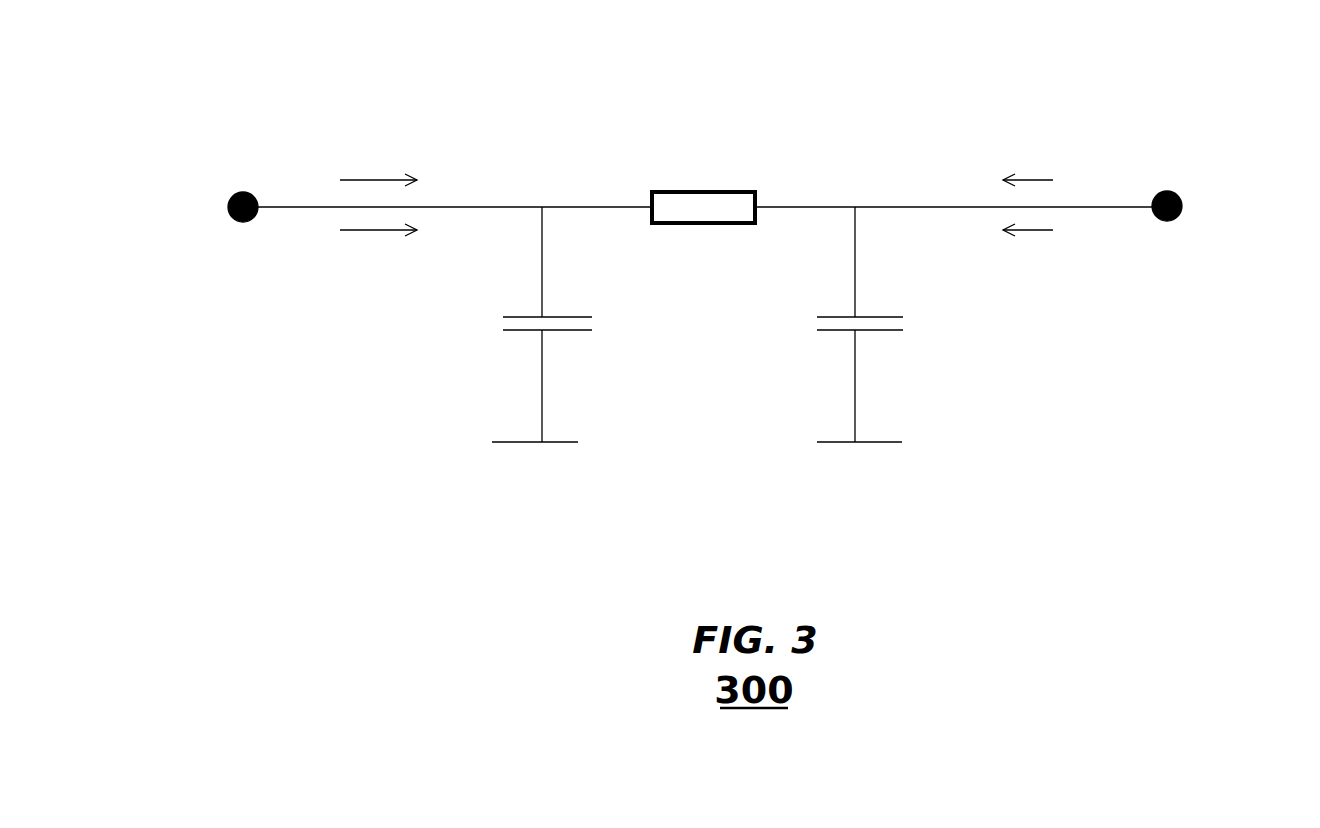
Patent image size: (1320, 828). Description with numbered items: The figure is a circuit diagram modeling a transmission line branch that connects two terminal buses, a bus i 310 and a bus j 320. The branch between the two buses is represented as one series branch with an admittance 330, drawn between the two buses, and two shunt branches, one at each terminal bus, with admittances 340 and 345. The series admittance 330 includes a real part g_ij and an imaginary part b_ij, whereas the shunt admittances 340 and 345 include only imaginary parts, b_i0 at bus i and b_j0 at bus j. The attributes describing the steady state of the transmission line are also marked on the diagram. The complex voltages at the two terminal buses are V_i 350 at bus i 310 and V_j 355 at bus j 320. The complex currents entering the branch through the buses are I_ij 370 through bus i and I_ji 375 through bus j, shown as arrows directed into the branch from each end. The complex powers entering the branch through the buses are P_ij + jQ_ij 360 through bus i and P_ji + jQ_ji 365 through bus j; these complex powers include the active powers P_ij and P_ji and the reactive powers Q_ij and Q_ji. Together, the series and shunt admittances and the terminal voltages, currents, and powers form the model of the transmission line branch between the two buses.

The bus i 310 is at (237, 220).
The bus j 320 is at (1182, 213).
The series branch admittance 330 is at (715, 132).
The shunt branch admittance at bus i 340 is at (625, 342).
The shunt branch admittance at bus j 345 is at (790, 350).
The complex voltage V_i 350 is at (260, 158).
The complex voltage V_j 355 is at (1162, 157).
The complex power P_ij + jQ_ij 360 is at (373, 120).
The complex power P_ji + jQ_ji 365 is at (1062, 127).
The complex current I_ij 370 is at (393, 275).
The complex current I_ji 375 is at (1035, 287).